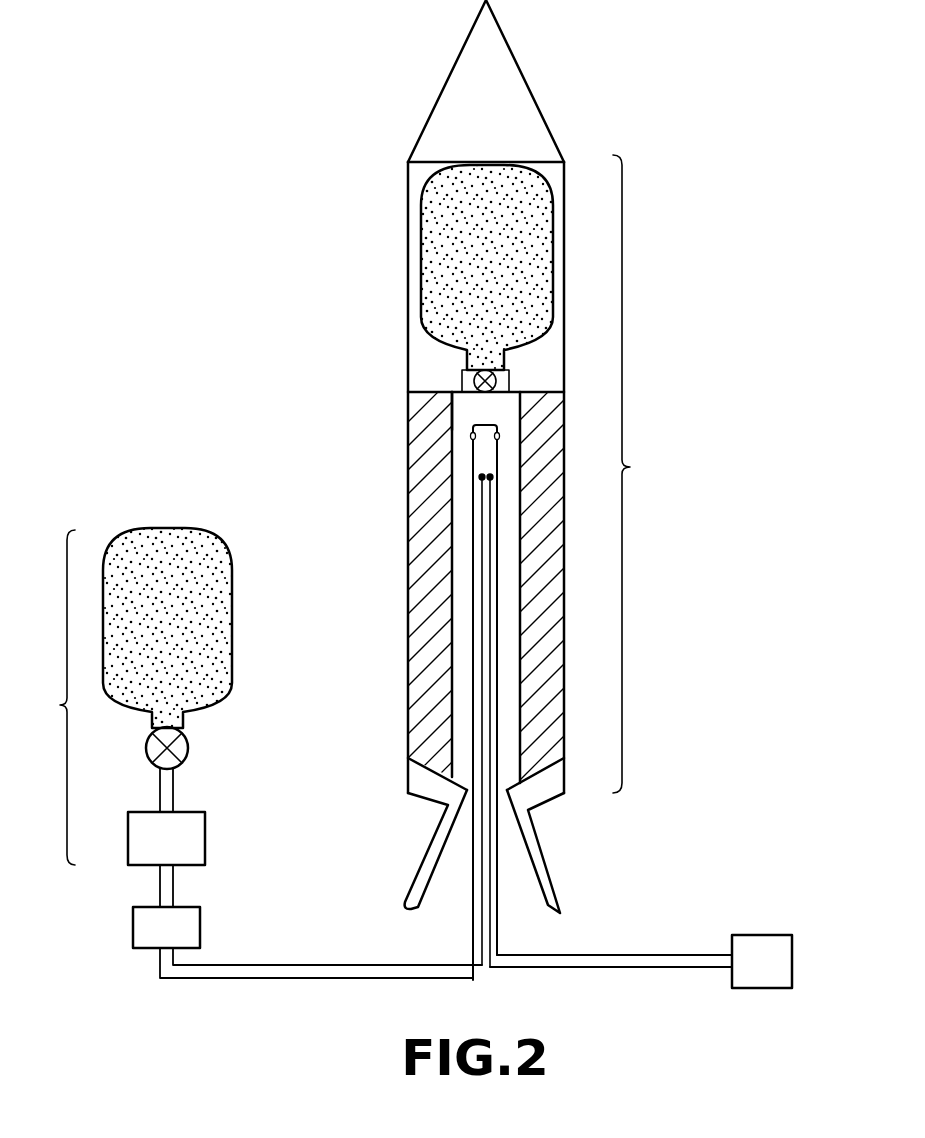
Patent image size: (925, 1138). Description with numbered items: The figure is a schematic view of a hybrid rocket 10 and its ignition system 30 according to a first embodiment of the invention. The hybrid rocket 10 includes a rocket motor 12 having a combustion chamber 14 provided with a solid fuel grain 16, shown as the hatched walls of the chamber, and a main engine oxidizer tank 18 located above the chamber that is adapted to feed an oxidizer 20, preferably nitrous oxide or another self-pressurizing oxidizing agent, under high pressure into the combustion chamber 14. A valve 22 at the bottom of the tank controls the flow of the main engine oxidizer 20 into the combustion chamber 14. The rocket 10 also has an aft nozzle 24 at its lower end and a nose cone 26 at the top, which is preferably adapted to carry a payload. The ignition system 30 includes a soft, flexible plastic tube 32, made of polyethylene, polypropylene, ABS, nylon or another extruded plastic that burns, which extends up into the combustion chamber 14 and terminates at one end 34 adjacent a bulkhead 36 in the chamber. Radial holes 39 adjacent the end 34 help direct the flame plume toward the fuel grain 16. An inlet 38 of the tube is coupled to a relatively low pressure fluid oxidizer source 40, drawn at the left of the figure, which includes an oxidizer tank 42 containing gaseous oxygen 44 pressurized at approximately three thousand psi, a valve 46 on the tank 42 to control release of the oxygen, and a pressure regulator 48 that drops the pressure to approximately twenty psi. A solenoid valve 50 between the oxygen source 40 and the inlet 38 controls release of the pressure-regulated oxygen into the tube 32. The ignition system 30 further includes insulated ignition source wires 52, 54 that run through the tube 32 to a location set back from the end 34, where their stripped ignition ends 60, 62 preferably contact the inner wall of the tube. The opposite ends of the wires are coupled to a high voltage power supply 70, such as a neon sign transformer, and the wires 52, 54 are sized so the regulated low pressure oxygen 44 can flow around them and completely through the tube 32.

The hybrid rocket 10 is at (666, 146).
The rocket motor 12 is at (537, 474).
The combustion chamber 14 is at (460, 486).
The solid fuel grain 16 is at (421, 627).
The main engine oxidizer tank 18 is at (420, 248).
The oxidizer 20 is at (430, 272).
The valve 22 is at (462, 378).
The aft nozzle 24 is at (548, 862).
The nose cone 26 is at (520, 62).
The ignition system 30 is at (470, 516).
The plastic tube 32 is at (470, 642).
The end of the tube 34 is at (473, 428).
The bulkhead 36 is at (450, 403).
The inlet 38 is at (160, 966).
The radial holes 39 is at (470, 438).
The low pressure fluid oxidizer source 40 is at (49, 697).
The oxidizer tank 42 is at (138, 533).
The gaseous oxygen 44 is at (195, 535).
The valve 46 is at (184, 748).
The pressure regulator 48 is at (204, 836).
The solenoid valve 50 is at (201, 926).
The ignition source wire 52 is at (565, 955).
The ignition source wire 54 is at (597, 969).
The ignition end 60 is at (492, 480).
The ignition end 62 is at (484, 481).
The high voltage power supply 70 is at (788, 955).